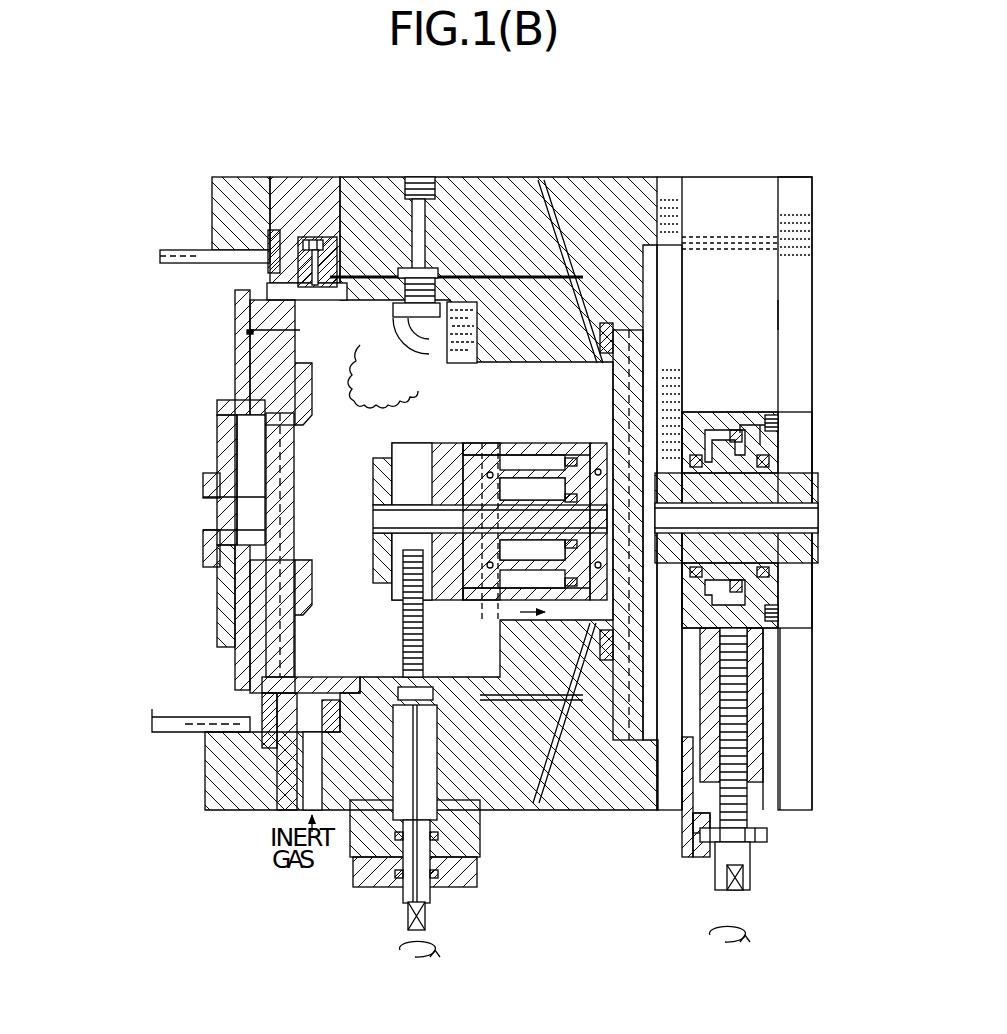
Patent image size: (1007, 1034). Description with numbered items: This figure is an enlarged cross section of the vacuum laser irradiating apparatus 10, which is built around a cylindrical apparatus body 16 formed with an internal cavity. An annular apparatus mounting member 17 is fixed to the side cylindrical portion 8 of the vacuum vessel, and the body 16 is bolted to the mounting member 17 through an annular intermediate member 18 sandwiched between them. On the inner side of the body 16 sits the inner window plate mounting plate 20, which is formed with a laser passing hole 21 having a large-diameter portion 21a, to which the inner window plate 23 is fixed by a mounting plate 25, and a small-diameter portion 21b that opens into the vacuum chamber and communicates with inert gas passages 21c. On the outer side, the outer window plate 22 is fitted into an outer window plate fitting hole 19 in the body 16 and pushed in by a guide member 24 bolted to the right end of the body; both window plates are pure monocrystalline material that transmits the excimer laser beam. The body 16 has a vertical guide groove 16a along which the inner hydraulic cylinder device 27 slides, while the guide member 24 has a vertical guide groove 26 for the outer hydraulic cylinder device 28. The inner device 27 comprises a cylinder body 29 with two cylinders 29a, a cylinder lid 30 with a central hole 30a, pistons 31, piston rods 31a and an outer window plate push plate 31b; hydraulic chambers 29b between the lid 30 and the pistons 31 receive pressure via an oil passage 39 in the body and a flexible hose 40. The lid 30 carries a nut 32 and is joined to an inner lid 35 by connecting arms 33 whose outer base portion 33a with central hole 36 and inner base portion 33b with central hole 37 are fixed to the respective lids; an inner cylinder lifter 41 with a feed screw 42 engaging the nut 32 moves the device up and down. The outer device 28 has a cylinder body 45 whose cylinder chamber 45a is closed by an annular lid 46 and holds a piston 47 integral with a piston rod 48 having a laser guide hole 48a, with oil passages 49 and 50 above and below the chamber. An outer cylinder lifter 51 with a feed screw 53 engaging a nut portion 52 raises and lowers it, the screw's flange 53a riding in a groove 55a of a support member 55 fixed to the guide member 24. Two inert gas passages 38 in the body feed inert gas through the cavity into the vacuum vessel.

The vacuum laser irradiating apparatus 10 is at (205, 174).
The side cylindrical portion 8 is at (175, 250).
The cylindrical apparatus body 16 is at (452, 473).
The vertical guide groove 16a is at (446, 338).
The annular apparatus mounting member 17 is at (215, 210).
The annular intermediate member 18 is at (308, 185).
The outer window plate fitting hole 19 is at (645, 358).
The inner window plate mounting plate 20 is at (236, 320).
The laser passing hole 21 is at (158, 400).
The large-diameter portion 21a is at (270, 400).
The small-diameter portion 21b is at (242, 434).
The inert gas passages 21c is at (256, 368).
The outer window plate 22 is at (650, 342).
The inner window plate 23 is at (240, 457).
The guide member 24 is at (758, 183).
The mounting plate 25 is at (310, 368).
The vertical guide groove 26 is at (780, 335).
The inner hydraulic cylinder device 27 is at (575, 412).
The outer hydraulic cylinder device 28 is at (820, 465).
The cylinder body 29 is at (516, 443).
The cylinders 29a is at (540, 455).
The hydraulic chambers 29b is at (468, 446).
The cylinder lid 30 is at (392, 424).
The central hole 30a is at (490, 521).
The pistons 31 is at (490, 440).
The piston rods 31a is at (565, 450).
The outer window plate push plate 31b is at (594, 448).
The nut 32 is at (392, 652).
The connecting arms 33 is at (330, 485).
The outer base portion 33a is at (374, 576).
The inner base portion 33b is at (212, 575).
The inner lid 35 is at (228, 645).
The central hole 36 is at (375, 517).
The central hole 37 is at (200, 545).
The inert gas passages 38 is at (548, 185).
The oil passage 39 is at (415, 183).
The flexible hose 40 is at (358, 346).
The inner cylinder lifter 41 is at (345, 862).
The feed screw 42 is at (478, 843).
The cylinder body 45 is at (748, 430).
The cylinder chamber 45a is at (730, 428).
The annular lid 46 is at (775, 395).
The piston 47 is at (780, 592).
The piston rod 48 is at (815, 490).
The laser guide hole 48a is at (815, 520).
The oil passage 49 is at (790, 420).
The oil passage 50 is at (790, 615).
The outer cylinder lifter 51 is at (760, 878).
The nut portion 52 is at (800, 742).
The feed screw 53 is at (750, 825).
The flange 53a is at (750, 848).
The support member 55 is at (682, 860).
The groove 55a is at (682, 840).